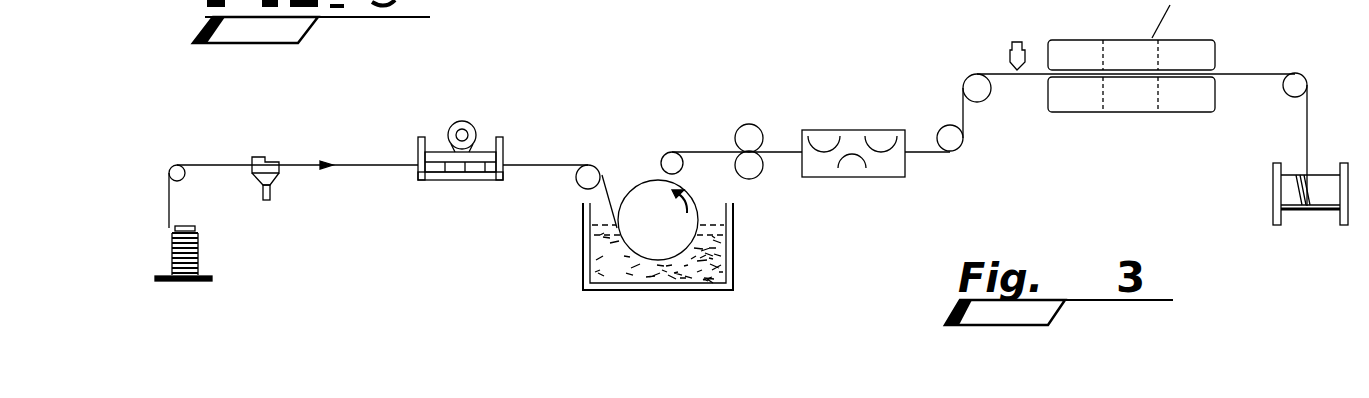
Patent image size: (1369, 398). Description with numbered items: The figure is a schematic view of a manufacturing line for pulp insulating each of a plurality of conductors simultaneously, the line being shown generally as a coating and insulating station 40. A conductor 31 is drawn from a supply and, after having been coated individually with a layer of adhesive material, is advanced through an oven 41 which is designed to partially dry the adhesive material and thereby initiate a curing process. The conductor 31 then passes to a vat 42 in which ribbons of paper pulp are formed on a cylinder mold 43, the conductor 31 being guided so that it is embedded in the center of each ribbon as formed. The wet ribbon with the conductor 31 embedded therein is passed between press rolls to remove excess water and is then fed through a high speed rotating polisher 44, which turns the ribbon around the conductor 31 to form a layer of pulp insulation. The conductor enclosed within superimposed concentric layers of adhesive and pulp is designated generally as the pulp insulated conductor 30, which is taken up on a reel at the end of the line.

The pulp insulated conductor 30 is at (1262, 73).
The conductor 31 is at (211, 164).
The coating station 40 is at (732, 96).
The oven 41 is at (505, 141).
The vat 42 is at (640, 150).
The cylinder mold 43 is at (632, 215).
The polisher 44 is at (860, 130).